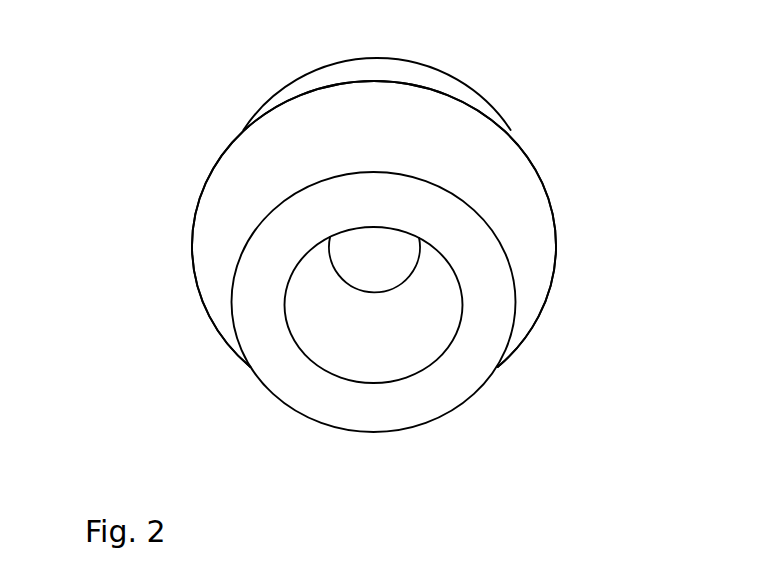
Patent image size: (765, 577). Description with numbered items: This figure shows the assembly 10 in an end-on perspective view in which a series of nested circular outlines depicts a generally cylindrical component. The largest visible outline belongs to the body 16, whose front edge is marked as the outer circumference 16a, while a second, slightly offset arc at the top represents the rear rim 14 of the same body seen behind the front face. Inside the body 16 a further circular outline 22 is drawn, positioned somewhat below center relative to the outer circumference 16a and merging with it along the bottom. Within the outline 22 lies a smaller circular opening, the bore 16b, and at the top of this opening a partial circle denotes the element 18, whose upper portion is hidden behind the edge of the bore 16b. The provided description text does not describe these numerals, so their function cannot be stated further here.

The fastening device assembly 10 is at (158, 268).
The rear rim of sleeve 14 is at (402, 74).
The sleeve body 16 is at (218, 193).
The outer circumferential surface of sleeve 16a is at (528, 278).
The inner bore of sleeve 16b is at (436, 336).
The pin element inside bore 18 is at (377, 232).
The annular boss on front face 22 is at (273, 362).